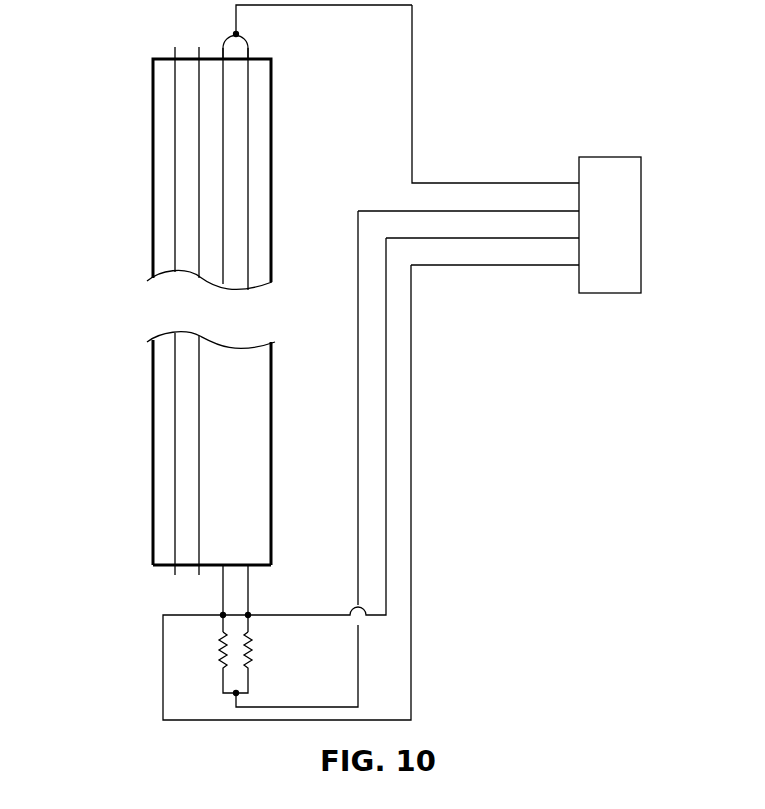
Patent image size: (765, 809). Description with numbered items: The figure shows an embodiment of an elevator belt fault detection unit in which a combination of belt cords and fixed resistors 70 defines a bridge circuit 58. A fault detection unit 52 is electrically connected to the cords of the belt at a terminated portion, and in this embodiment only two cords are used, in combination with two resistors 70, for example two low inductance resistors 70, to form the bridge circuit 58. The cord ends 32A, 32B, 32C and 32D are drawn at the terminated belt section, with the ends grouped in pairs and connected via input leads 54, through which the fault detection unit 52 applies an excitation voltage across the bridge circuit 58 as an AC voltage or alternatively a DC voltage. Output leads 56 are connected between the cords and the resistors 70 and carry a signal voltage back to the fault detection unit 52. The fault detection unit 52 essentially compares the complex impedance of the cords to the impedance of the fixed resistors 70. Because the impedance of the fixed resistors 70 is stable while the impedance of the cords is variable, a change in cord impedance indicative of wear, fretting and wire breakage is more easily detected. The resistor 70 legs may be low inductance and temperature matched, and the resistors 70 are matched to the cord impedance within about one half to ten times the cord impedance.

The cord end 32A is at (175, 116).
The cord end 32B is at (198, 167).
The cord end 32C is at (222, 215).
The cord end 32D is at (247, 263).
The fault detection unit 52 is at (623, 157).
The input leads 54 is at (235, 33).
The output leads 56 is at (222, 580).
The bridge circuit 58 is at (138, 605).
The fixed resistors 70 is at (220, 651).